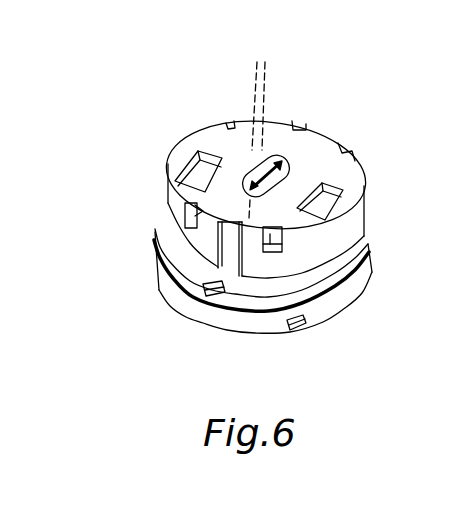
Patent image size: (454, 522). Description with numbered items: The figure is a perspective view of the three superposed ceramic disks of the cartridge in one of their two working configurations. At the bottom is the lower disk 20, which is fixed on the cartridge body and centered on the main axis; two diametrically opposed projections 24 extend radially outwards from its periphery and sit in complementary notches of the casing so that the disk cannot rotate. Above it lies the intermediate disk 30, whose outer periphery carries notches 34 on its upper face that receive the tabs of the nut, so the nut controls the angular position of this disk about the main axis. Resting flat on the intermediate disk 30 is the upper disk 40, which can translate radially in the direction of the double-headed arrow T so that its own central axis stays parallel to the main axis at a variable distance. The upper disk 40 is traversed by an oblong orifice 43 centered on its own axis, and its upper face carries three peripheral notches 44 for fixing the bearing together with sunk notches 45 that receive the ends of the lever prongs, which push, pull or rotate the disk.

The lower disk 20 is at (205, 322).
The projections 24 is at (297, 331).
The intermediate disk 30 is at (155, 229).
The notches 34 is at (215, 302).
The upper disk 40 is at (176, 141).
The orifice 43 is at (292, 167).
The notches 44 is at (303, 126).
The notches 45 is at (202, 152).